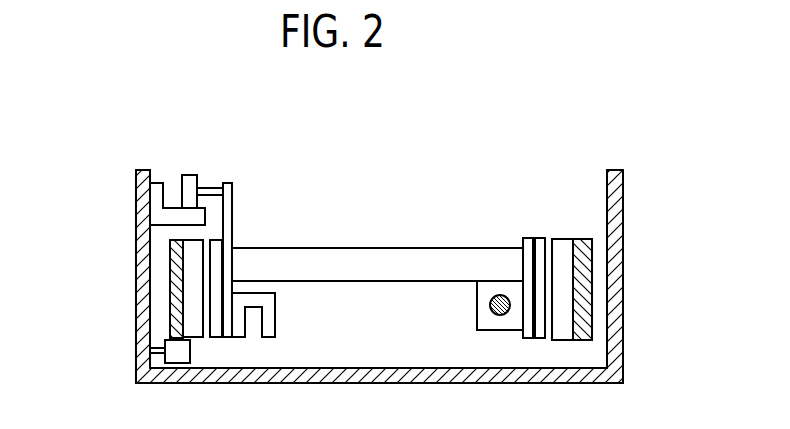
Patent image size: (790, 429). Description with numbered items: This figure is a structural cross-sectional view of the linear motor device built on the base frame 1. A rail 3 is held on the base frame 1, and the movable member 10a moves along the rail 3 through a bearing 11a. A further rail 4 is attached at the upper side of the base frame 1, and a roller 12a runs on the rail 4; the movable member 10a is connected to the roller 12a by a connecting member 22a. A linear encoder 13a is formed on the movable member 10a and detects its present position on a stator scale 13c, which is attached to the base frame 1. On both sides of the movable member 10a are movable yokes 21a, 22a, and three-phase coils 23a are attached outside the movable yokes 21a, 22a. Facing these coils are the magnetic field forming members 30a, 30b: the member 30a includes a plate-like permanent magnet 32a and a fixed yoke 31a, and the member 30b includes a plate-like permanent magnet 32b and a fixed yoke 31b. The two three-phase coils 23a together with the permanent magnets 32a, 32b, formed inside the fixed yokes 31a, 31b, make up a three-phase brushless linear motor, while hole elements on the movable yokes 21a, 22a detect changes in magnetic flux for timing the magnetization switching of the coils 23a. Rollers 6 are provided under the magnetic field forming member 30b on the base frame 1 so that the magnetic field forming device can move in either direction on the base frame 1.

The base frame 1 is at (623, 275).
The rail 3 is at (490, 303).
The rail 4 is at (170, 208).
The roller 6 is at (170, 363).
The movable member 10a is at (377, 262).
The bearing 11a is at (500, 317).
The roller 12a is at (188, 175).
The linear encoder 13a is at (275, 312).
The stator scale 13c is at (253, 320).
The movable yoke 21a is at (523, 238).
The movable yoke / connecting member 22a is at (232, 210).
The three-phase coil 23a is at (215, 337).
The magnetic field forming member 30a is at (595, 223).
The magnetic field forming member 30b is at (160, 237).
The fixed yoke 31a is at (580, 239).
The fixed yoke 31b is at (178, 273).
The permanent magnet 32a is at (563, 239).
The permanent magnet 32b is at (193, 308).